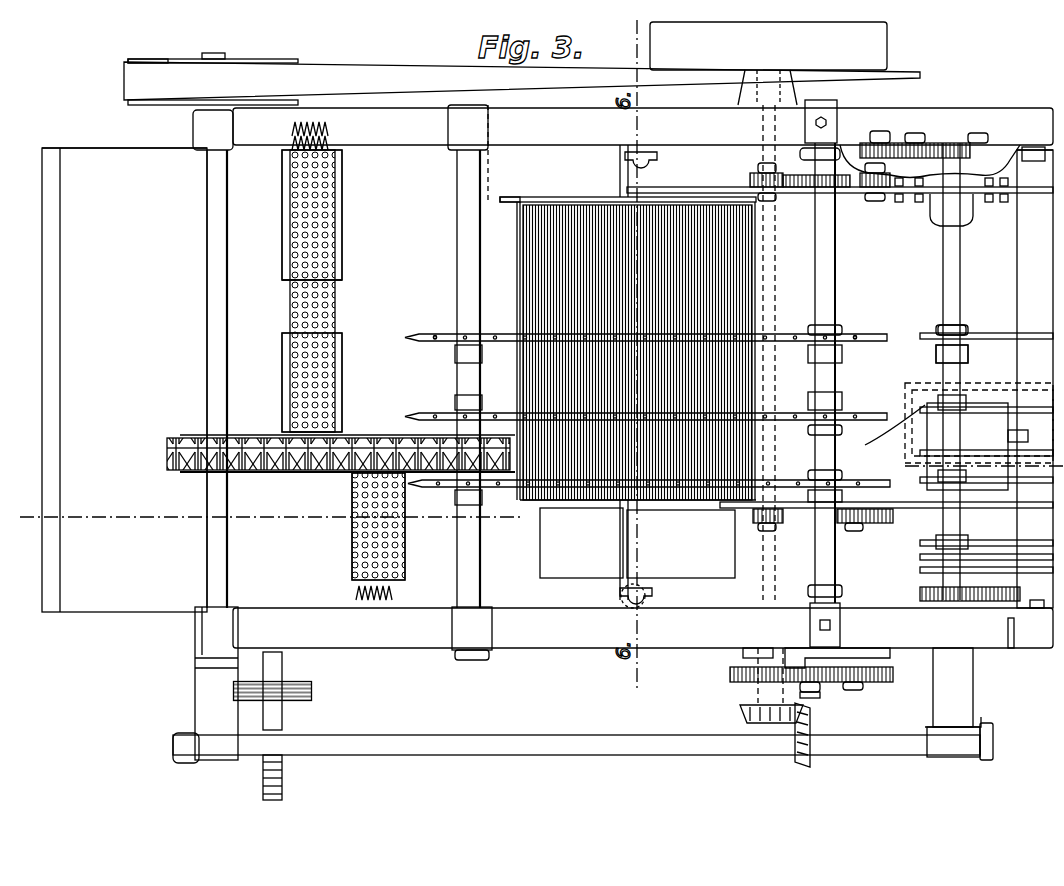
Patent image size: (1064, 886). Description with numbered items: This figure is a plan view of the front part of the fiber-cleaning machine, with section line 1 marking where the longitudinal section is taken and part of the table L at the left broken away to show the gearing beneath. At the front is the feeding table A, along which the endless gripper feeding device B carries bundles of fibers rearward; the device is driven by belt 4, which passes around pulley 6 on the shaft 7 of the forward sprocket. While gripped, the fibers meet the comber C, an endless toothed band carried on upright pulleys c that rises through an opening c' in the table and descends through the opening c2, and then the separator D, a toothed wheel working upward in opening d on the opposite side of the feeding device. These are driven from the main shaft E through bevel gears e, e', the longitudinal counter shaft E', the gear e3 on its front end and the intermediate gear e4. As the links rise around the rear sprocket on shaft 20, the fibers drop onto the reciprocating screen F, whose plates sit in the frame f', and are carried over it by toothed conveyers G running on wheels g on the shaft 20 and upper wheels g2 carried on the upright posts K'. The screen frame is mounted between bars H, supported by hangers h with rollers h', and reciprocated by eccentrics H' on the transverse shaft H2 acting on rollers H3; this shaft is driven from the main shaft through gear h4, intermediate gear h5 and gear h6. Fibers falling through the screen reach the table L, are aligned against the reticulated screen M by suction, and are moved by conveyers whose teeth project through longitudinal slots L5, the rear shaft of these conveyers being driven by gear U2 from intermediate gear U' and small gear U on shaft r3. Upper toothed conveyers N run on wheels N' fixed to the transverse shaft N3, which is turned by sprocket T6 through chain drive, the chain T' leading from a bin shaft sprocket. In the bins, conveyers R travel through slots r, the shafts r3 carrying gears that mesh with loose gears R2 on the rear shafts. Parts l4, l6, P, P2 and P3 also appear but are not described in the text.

The section line 1— 1 is at (536, 489).
The belt 4 is at (352, 80).
The pulley 6 is at (140, 68).
The shaft 7 is at (205, 297).
The shaft 20 is at (458, 212).
The feeding table A is at (124, 380).
The endless gripper feeding device B is at (180, 470).
The comber C is at (345, 302).
The upright pulleys c is at (330, 258).
The opening c2 is at (345, 278).
The opening c' is at (332, 382).
The separator D is at (395, 538).
The opening d is at (400, 570).
The main shaft E is at (693, 560).
The longitudinal counter shaft E' is at (583, 753).
The bevel gear e is at (750, 715).
The bevel gear e' is at (792, 749).
The gear e3 is at (283, 773).
The intermediate gear e4 is at (283, 678).
The reciprocating screen F is at (547, 210).
The frame f' is at (508, 232).
The toothed conveyers G is at (520, 332).
The upright wheels g is at (436, 345).
The wheels g2 is at (858, 341).
The bars H is at (831, 347).
The eccentrics H' is at (833, 373).
The transverse shaft H2 is at (828, 675).
The rollers H3 is at (755, 172).
The hangers h is at (829, 220).
The rollers h' is at (832, 389).
The gear h4 is at (735, 670).
The intermediate gear h5 is at (895, 675).
The gear h6 is at (818, 690).
The upright posts K' is at (845, 366).
The table L is at (955, 367).
The longitudinal slots L5 is at (980, 408).
The bearing l4 is at (882, 128).
The lever l6 is at (925, 412).
The reticulated screen M is at (615, 595).
The toothed conveyers N is at (929, 350).
The wheels N' is at (919, 363).
The transverse shaft N3 is at (960, 276).
The shaft P is at (770, 675).
The rod P2 is at (1010, 645).
The shaft P3 is at (780, 545).
The toothed conveyers R is at (967, 515).
The gears R2 is at (1050, 648).
The slots r is at (1011, 436).
The transverse shafts r3 is at (980, 132).
The chain T' is at (966, 666).
The sprocket T6 is at (950, 605).
The small gear U is at (931, 128).
The intermediate gear U' is at (936, 104).
The small gear U2 is at (905, 145).